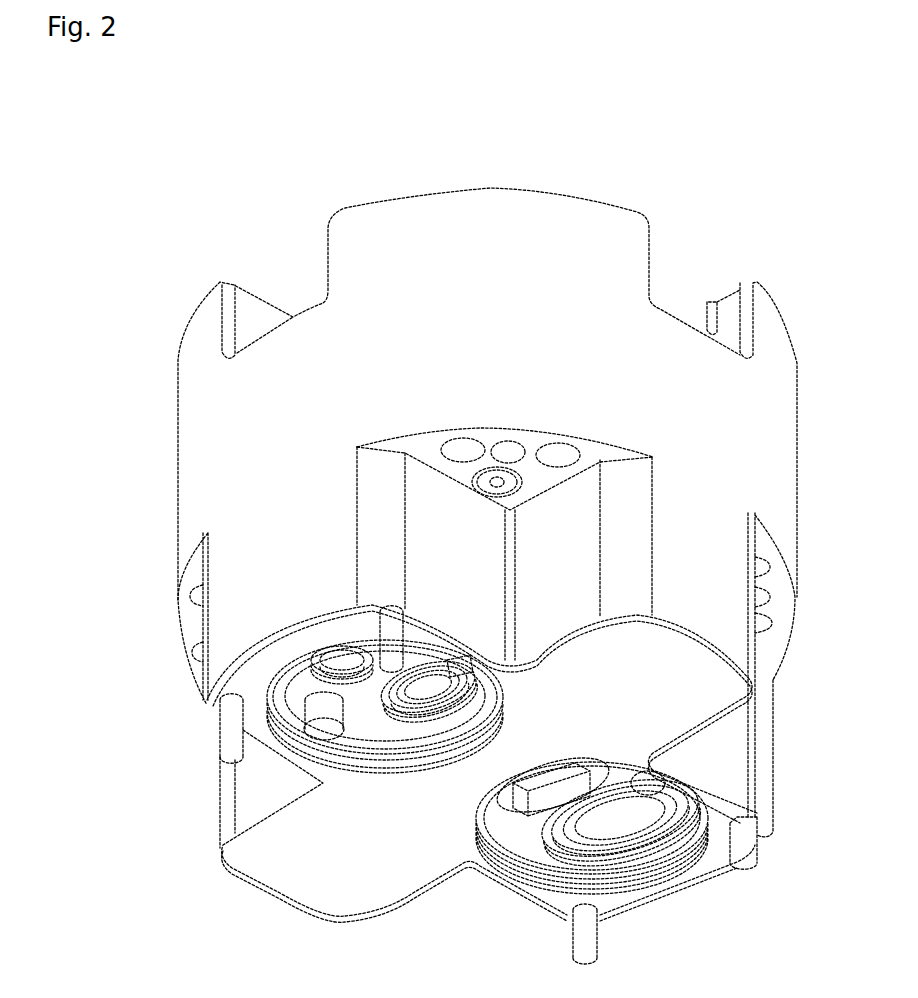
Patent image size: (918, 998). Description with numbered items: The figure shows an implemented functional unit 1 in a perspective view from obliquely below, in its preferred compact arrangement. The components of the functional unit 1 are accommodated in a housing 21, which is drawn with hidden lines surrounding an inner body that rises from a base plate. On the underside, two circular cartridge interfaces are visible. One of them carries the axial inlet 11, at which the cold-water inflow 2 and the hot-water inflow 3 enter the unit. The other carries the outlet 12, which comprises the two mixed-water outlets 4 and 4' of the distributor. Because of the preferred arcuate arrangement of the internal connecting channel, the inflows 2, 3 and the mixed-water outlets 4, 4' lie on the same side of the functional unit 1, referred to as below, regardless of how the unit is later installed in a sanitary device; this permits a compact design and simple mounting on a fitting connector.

The functional unit 1 is at (262, 162).
The housing 21 is at (563, 333).
The mixed-water outlet 4 is at (385, 728).
The mixed-water outlet 4' is at (313, 637).
The outlet 12 is at (375, 711).
The axial inlet 11 is at (606, 786).
The cold-water inflow 2 is at (616, 835).
The hot-water inflow 3 is at (535, 800).